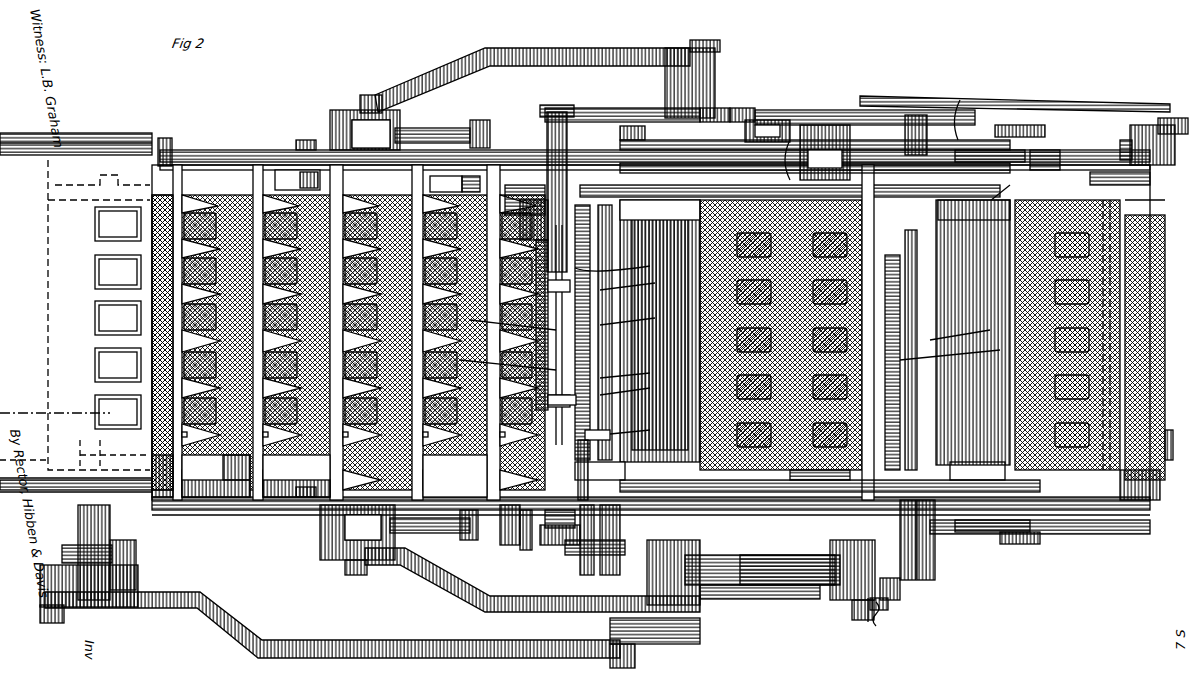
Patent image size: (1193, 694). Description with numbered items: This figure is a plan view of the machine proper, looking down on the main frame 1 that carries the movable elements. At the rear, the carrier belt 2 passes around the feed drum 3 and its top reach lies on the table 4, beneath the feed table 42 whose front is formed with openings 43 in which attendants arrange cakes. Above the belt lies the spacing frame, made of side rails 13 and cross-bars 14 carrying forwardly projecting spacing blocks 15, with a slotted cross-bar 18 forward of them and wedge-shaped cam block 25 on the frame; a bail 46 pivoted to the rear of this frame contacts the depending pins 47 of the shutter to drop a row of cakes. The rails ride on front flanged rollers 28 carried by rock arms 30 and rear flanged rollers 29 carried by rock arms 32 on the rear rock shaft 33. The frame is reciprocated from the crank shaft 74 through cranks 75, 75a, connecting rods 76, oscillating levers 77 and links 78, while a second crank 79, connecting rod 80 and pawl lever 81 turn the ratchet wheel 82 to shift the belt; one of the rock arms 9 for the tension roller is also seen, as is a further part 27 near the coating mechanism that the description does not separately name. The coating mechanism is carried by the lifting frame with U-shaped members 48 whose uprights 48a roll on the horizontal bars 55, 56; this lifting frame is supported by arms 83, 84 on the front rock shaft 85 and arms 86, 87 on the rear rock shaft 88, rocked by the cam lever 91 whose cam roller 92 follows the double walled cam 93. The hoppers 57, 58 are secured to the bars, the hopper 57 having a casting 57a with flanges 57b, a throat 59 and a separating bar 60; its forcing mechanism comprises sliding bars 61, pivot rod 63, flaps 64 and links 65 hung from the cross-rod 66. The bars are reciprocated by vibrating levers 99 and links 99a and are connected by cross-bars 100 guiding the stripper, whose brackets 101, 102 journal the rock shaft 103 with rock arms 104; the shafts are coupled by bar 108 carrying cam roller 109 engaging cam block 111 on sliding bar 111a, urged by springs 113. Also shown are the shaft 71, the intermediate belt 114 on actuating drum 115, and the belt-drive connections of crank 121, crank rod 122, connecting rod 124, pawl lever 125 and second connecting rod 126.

The main frame 1 is at (1080, 542).
The carrier belt 2 is at (248, 450).
The feed drum 3 is at (48, 465).
The table 4 is at (193, 194).
The rock arms 9 is at (76, 139).
The side bars or rails 13 is at (1150, 182).
The cross-bars 14 is at (232, 460).
The spacing blocks 15 is at (348, 332).
The slotted cross-bar 18 is at (165, 165).
The cam block 25 is at (462, 183).
The cam block 27 is at (825, 175).
The front double flanged rollers 28 is at (988, 150).
The rear double flanged rollers 29 is at (302, 145).
The rock arms 30 is at (1000, 150).
The rock arms 32 is at (328, 355).
The rear rock shaft 33 is at (1030, 556).
The feed table 42 is at (28, 392).
The openings 43 is at (106, 325).
The bail 46 is at (170, 500).
The depending pins 47 is at (781, 335).
The U-shaped frame members 48 is at (622, 555).
The uprights 48a is at (640, 110).
The horizontal bar 55 is at (678, 486).
The horizontal bar 56 is at (695, 150).
The hopper 57 is at (655, 198).
The casting 57a is at (815, 210).
The plates or flanges 57b is at (790, 471).
The hopper 58 is at (1080, 163).
The throat 59 is at (945, 448).
The separating bar 60 is at (792, 340).
The sliding bars 61 is at (612, 440).
The pivot rod 63 is at (633, 371).
The flaps 64 is at (576, 402).
The links 65 is at (622, 344).
The cross-rod 66 is at (637, 317).
The shaft 71 is at (540, 285).
The crank shaft 74 is at (510, 510).
The crank 75 is at (662, 592).
The crank 75a is at (718, 82).
The connecting rods 76 is at (528, 70).
The oscillating levers 77 is at (345, 118).
The links 78 is at (432, 136).
The second crank 79 is at (660, 640).
The connecting rod 80 is at (282, 635).
The pawl lever 81 is at (130, 578).
The ratchet wheel 82 is at (80, 545).
The arm 83 is at (895, 592).
The arm 84 is at (900, 130).
The front rock shaft 85 is at (868, 615).
The arm 86 is at (577, 558).
The arm 87 is at (560, 108).
The rear rock shaft 88 is at (565, 545).
The cam lever 91 is at (850, 605).
The cam roller 92 is at (820, 585).
The double walled cam 93 is at (783, 586).
The vibrating levers 99 is at (735, 162).
The links 99a is at (835, 160).
The cross-bars 100 is at (1030, 163).
The bracket 101 is at (532, 198).
The bracket 102 is at (545, 530).
The rock shaft 103 is at (600, 355).
The rock arms 104 is at (640, 334).
The bar 108 is at (605, 102).
The cam roller 109 is at (758, 118).
The cam block 111 is at (795, 140).
The bar 111a is at (955, 100).
The springs 113 is at (935, 545).
The intermediate belt 114 is at (1145, 500).
The actuating drum 115 is at (1162, 240).
The crank 121 is at (762, 125).
The crank rod 122 is at (1022, 95).
The connecting rod 124 is at (1175, 126).
The pawl lever 125 is at (1135, 150).
The second connecting rod 126 is at (820, 488).